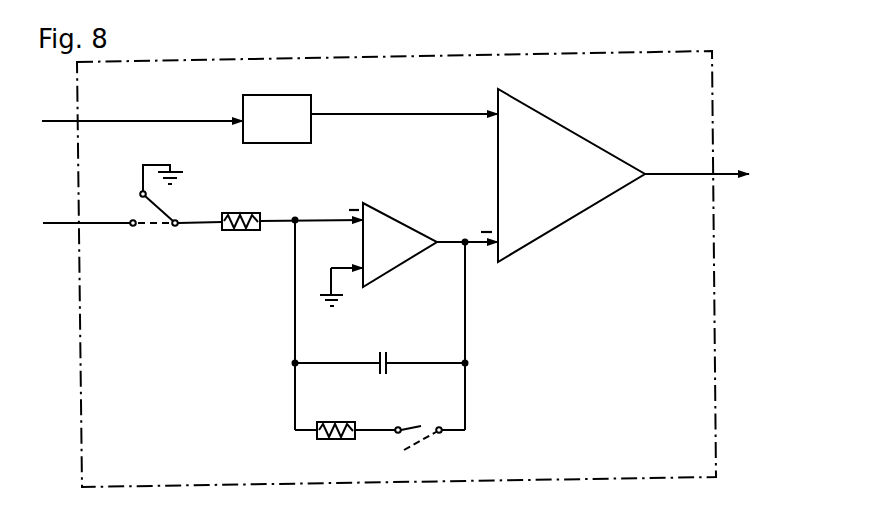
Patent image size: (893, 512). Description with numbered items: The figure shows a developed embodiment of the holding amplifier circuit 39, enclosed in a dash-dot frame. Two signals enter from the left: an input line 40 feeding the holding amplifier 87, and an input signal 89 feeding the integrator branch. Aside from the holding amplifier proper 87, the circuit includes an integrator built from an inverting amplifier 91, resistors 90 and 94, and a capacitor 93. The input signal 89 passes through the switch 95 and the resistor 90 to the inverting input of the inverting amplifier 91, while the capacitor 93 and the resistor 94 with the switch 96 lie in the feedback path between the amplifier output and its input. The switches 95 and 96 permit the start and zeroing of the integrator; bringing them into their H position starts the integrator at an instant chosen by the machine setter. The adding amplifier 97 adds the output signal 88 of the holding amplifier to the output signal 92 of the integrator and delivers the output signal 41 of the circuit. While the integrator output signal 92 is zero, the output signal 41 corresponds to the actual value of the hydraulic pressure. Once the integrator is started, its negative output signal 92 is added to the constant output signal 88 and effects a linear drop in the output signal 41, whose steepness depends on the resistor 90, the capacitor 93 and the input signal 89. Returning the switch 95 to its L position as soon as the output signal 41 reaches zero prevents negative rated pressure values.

The holding amplifier circuit 39 is at (718, 391).
The input signal line 40 is at (53, 118).
The output signal 41 is at (733, 171).
The holding amplifier 87 is at (289, 130).
The output signal of the holding amplifier 88 is at (404, 102).
The input signal 89 is at (60, 221).
The resistor 90 is at (240, 233).
The inverting amplifier 91 is at (398, 255).
The output signal of the integrator 92 is at (446, 238).
The capacitor 93 is at (393, 352).
The resistor 94 is at (337, 420).
The switch 95 is at (152, 228).
The switch 96 is at (418, 426).
The adding amplifier 97 is at (563, 185).